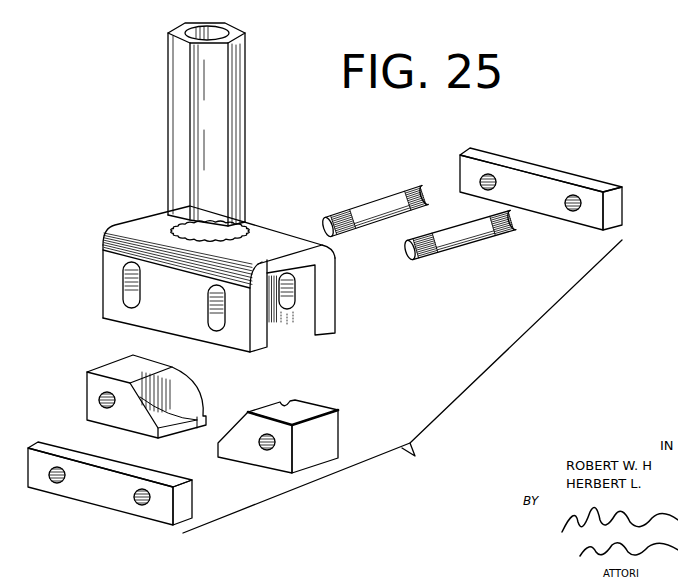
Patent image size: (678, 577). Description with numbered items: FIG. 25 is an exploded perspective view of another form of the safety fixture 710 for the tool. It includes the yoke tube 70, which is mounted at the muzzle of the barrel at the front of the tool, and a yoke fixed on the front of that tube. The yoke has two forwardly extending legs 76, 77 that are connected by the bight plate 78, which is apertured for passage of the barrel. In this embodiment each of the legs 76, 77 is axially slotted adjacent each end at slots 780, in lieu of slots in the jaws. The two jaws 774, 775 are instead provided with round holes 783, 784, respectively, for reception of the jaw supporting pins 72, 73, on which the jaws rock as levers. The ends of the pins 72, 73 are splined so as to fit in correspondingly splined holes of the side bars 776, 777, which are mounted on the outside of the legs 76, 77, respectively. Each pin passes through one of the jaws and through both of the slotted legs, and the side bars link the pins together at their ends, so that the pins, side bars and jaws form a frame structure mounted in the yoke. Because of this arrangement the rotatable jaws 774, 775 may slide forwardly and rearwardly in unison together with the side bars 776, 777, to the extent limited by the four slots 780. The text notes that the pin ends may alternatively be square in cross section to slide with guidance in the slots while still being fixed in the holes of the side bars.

The yoke tube 70 is at (240, 70).
The channel block assembly 710 is at (213, 283).
The leg 76 is at (256, 344).
The leg 77 is at (325, 328).
The bight plate 78 is at (279, 237).
The slots 780 is at (123, 287).
The jaw supporting pin 72 is at (376, 203).
The jaw supporting pin 73 is at (470, 244).
The side bar 777 is at (561, 191).
The jaw 774 is at (128, 389).
The round hole 783 is at (100, 402).
The jaw 775 is at (297, 443).
The round hole 784 is at (262, 452).
The side bar 776 is at (125, 491).